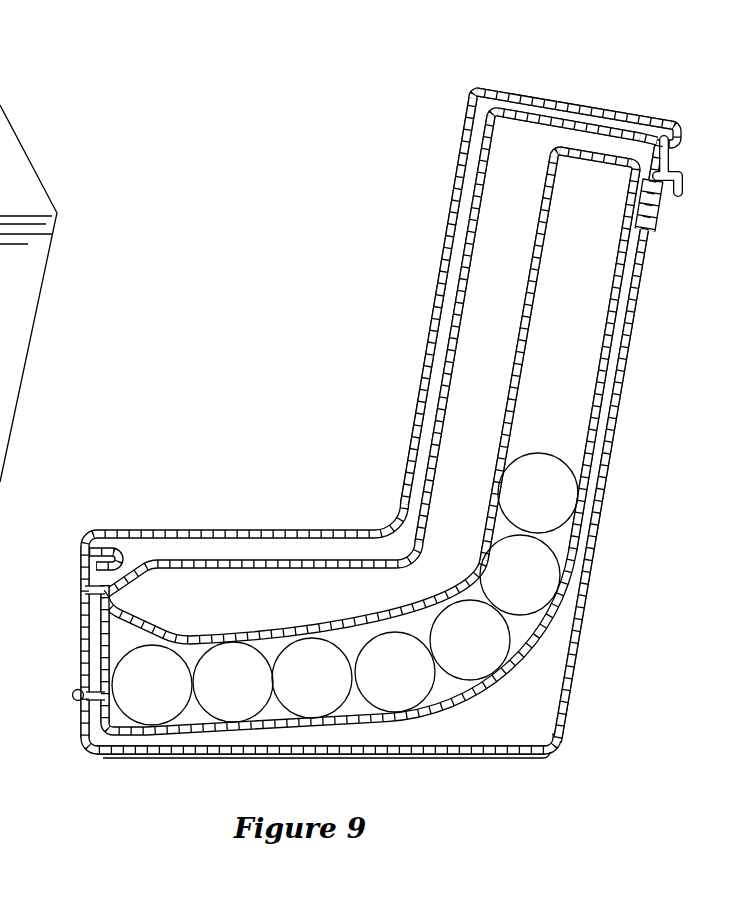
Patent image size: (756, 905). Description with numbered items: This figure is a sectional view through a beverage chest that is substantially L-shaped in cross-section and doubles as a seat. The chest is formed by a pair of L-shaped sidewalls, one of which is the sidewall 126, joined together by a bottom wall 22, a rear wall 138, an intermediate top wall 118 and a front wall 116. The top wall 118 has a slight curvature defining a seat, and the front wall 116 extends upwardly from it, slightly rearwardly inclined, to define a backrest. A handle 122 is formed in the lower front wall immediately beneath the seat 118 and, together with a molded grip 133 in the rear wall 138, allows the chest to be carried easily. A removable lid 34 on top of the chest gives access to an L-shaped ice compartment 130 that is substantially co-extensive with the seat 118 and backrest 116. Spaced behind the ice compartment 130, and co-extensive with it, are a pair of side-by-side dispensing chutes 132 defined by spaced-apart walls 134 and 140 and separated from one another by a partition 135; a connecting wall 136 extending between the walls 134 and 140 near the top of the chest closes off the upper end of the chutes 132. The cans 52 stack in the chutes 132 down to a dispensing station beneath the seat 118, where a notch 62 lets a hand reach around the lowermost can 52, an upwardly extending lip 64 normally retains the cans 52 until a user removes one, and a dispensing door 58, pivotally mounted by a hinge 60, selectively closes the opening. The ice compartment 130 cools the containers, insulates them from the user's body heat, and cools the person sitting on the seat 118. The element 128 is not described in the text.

The bottom wall 22 is at (441, 756).
The lid 34 is at (584, 102).
The can 52 is at (484, 650).
The dispensing door 58 is at (84, 653).
The hinge 60 is at (72, 695).
The notch 62 is at (125, 633).
The lip 64 is at (93, 698).
The front wall 116 is at (430, 269).
The intermediate top wall 118 is at (241, 530).
The handle 122 is at (100, 560).
The L-shaped sidewall 126 is at (487, 346).
The inner shelf wall 128 is at (168, 560).
The ice compartment 130 is at (510, 165).
The dispensing chute 132 is at (590, 243).
The molded grip 133 is at (683, 176).
The chute wall 134 is at (548, 212).
The partition 135 is at (574, 316).
The connecting wall 136 is at (612, 150).
The rear wall 138 is at (612, 474).
The chute wall 140 is at (618, 346).